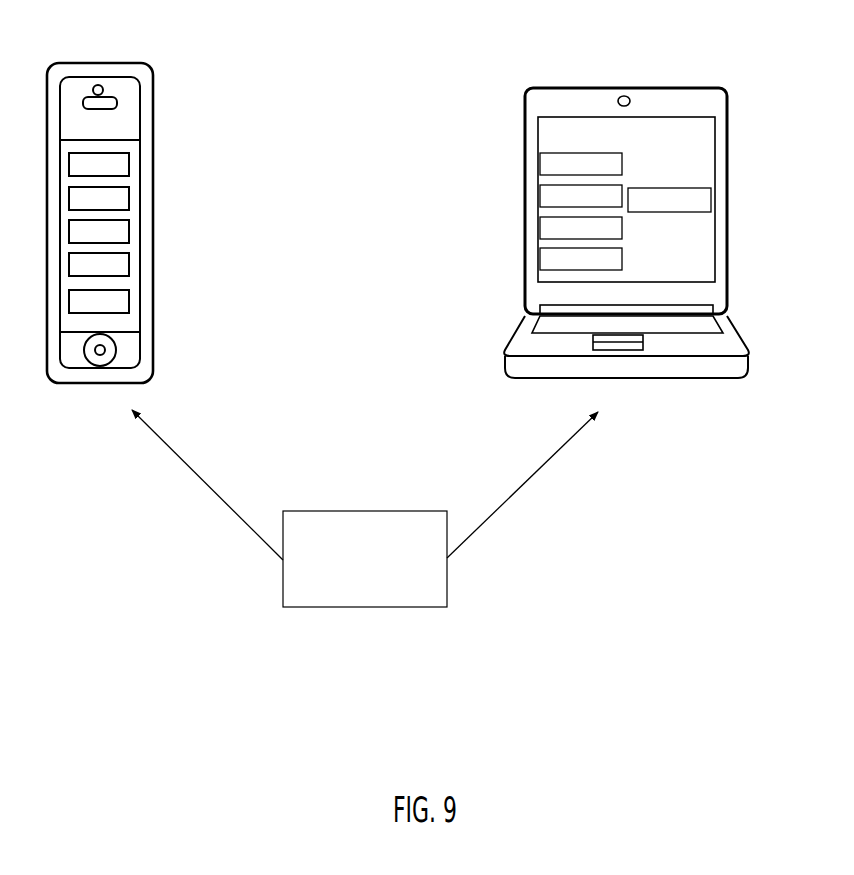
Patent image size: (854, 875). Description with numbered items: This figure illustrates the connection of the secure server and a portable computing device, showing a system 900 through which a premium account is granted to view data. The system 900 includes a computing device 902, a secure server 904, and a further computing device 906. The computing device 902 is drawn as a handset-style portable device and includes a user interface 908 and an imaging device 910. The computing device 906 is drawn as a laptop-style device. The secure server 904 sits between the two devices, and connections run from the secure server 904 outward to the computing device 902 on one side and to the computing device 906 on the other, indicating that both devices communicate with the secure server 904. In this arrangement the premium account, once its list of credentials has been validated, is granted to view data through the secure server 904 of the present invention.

The system 900 is at (650, 671).
The computing device 902 is at (158, 199).
The secure server 904 is at (362, 515).
The computing device 906 is at (600, 88).
The user interface 908 is at (128, 248).
The imaging device 910 is at (103, 88).